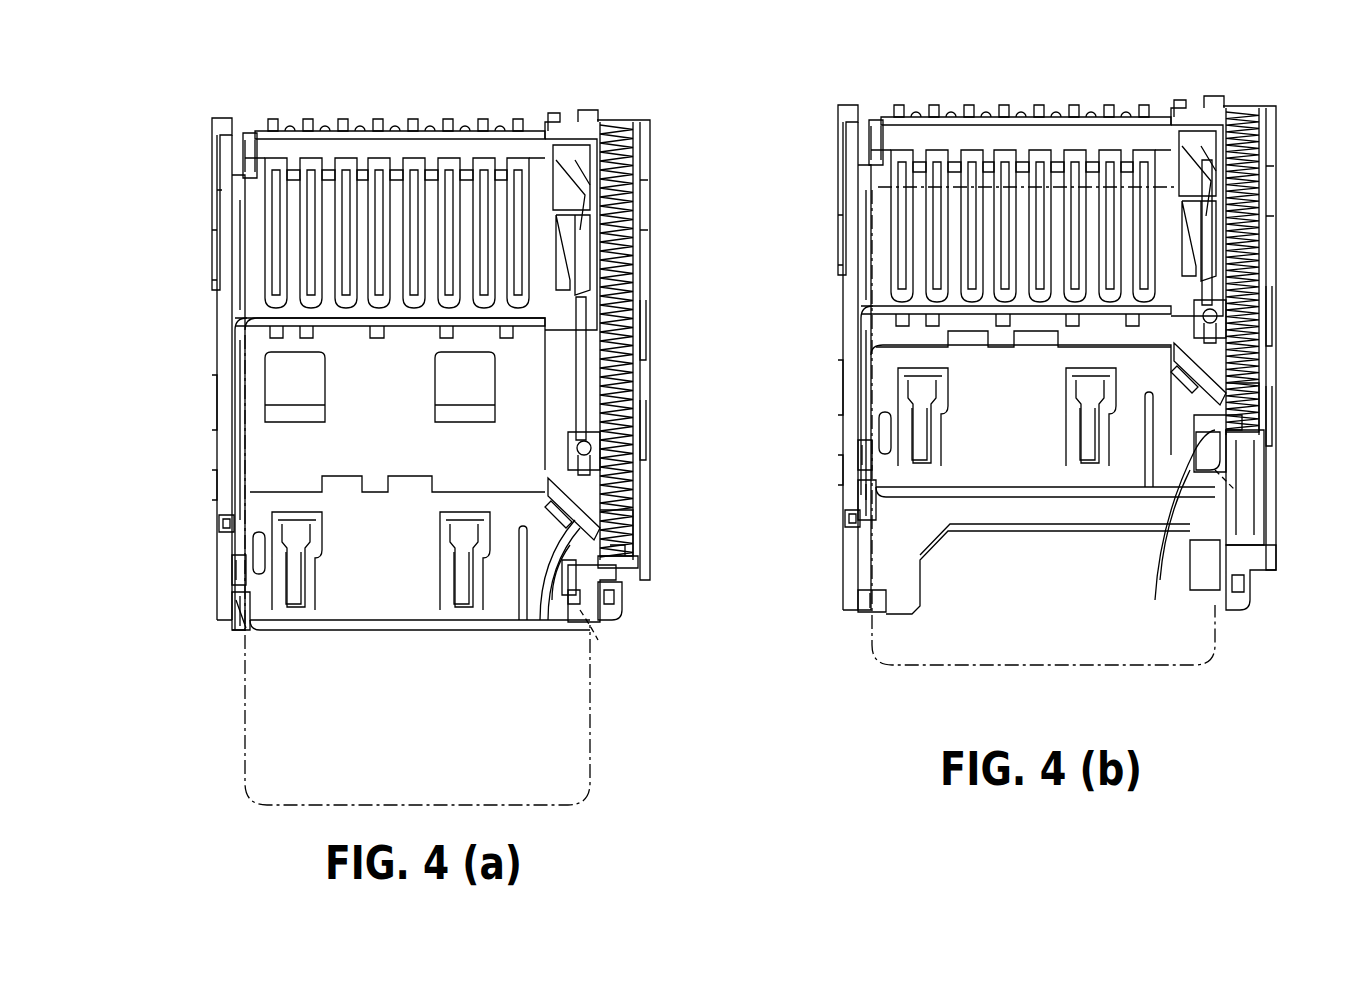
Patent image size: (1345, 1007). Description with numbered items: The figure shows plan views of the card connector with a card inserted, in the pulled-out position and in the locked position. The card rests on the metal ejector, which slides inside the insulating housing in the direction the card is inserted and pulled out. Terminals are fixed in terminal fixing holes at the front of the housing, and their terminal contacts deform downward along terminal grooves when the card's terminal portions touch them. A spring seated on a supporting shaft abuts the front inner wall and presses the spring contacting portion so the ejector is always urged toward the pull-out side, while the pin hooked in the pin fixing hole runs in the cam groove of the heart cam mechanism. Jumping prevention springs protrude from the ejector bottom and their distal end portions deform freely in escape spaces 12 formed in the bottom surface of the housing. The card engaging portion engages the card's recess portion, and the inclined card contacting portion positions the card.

The escape spaces 12 is at (268, 362).